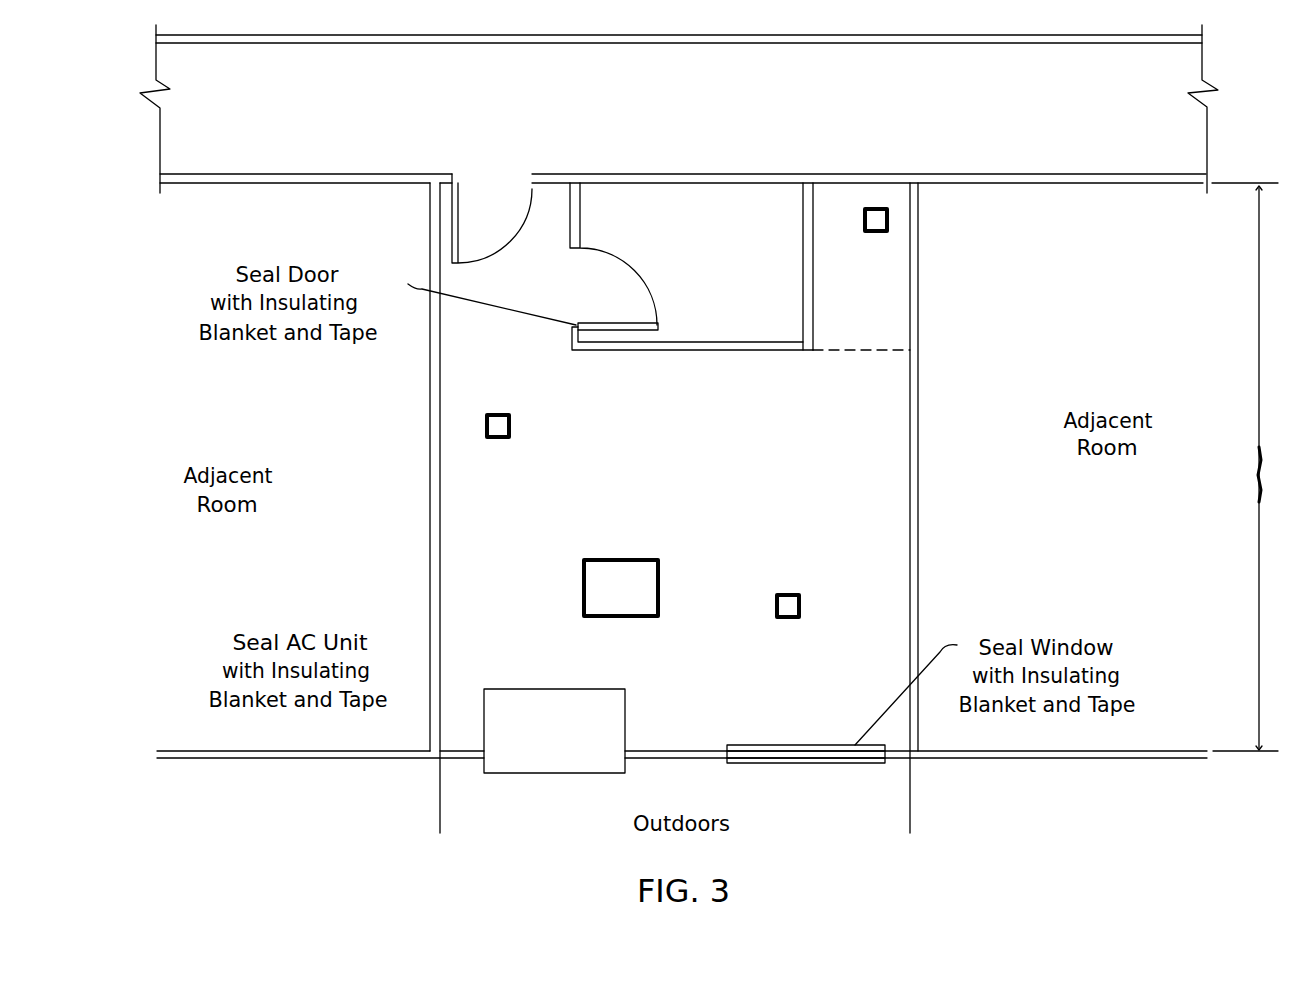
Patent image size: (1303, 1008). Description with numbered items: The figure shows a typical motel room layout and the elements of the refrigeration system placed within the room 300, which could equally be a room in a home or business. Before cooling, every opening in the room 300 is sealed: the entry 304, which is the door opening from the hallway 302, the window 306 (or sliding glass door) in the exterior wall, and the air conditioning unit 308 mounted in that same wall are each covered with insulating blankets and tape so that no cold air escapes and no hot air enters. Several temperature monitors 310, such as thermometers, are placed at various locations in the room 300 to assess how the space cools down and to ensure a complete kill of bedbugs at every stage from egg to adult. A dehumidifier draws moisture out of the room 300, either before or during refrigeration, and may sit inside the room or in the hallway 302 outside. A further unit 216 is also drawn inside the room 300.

The hallway 302 is at (743, 93).
The entry 304 is at (452, 243).
The window 306 is at (853, 763).
The air conditioning unit 308 is at (504, 689).
The temperature monitors 310 is at (889, 218).
The room 300 is at (728, 488).
The device 216 is at (581, 590).